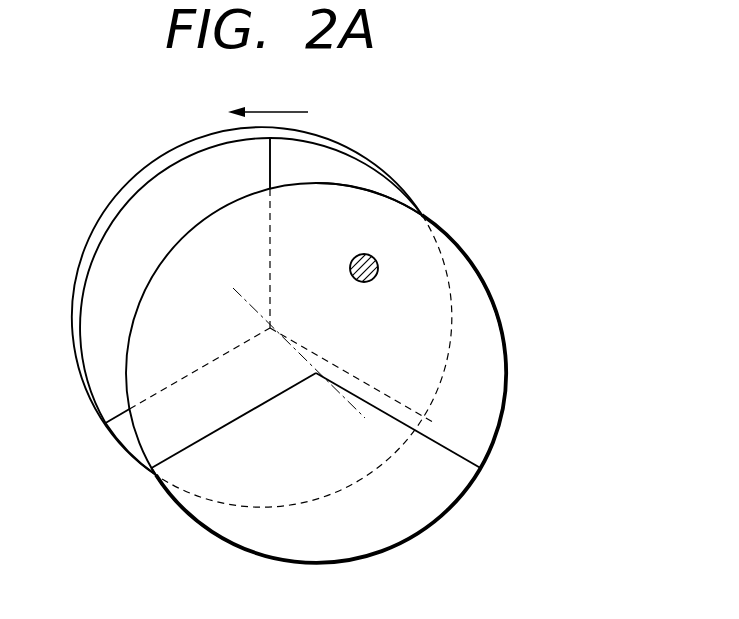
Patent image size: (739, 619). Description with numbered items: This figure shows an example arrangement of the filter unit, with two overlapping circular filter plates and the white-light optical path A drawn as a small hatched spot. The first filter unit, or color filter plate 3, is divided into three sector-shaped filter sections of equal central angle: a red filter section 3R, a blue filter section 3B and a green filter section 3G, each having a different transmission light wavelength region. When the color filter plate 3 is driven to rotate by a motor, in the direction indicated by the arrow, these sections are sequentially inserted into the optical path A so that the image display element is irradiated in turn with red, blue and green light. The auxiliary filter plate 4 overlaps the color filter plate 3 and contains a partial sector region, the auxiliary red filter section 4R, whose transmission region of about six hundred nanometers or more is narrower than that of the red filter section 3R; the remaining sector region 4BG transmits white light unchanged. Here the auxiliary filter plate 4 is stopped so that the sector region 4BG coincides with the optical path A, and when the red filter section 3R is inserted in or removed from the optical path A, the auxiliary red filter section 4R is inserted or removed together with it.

The first filter unit 3 is at (79, 373).
The blue filter section 3B is at (135, 218).
The green filter section 3G is at (128, 433).
The red filter section 3R is at (342, 162).
The auxiliary filter plate 4 is at (512, 414).
The sector region 4BG is at (483, 322).
The auxiliary red filter section 4R is at (413, 520).
The optical path A is at (379, 261).